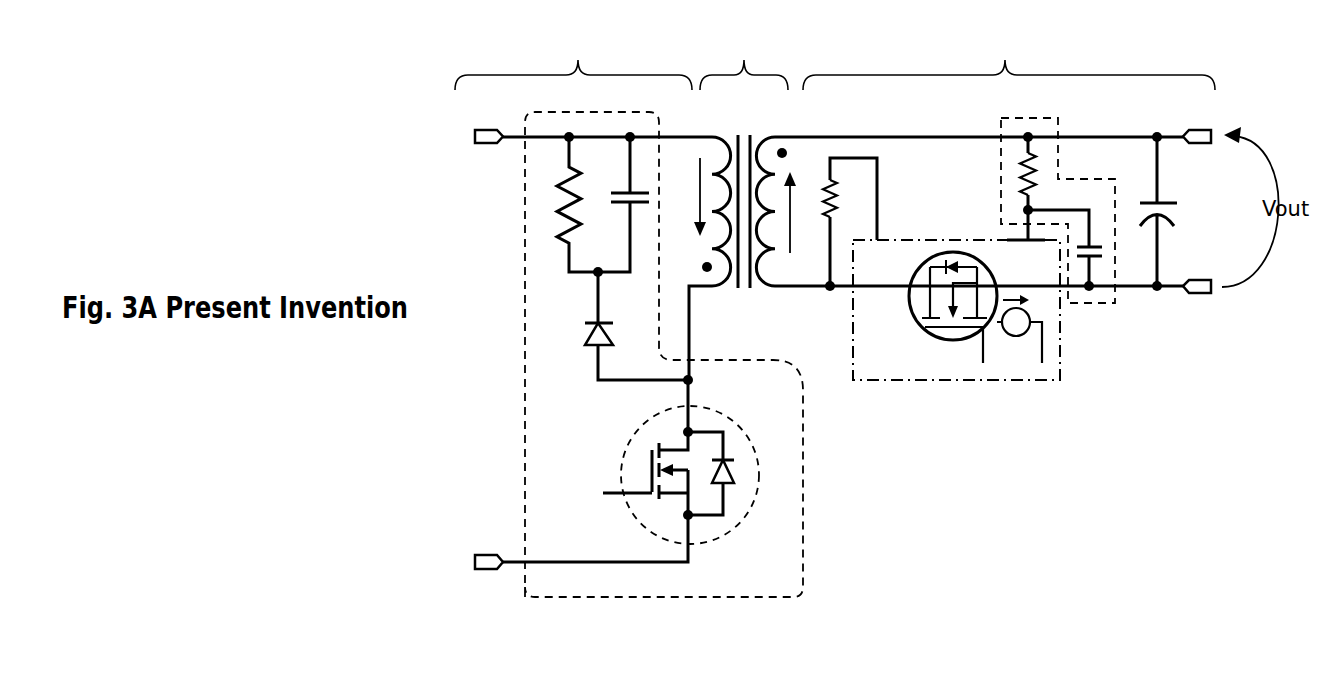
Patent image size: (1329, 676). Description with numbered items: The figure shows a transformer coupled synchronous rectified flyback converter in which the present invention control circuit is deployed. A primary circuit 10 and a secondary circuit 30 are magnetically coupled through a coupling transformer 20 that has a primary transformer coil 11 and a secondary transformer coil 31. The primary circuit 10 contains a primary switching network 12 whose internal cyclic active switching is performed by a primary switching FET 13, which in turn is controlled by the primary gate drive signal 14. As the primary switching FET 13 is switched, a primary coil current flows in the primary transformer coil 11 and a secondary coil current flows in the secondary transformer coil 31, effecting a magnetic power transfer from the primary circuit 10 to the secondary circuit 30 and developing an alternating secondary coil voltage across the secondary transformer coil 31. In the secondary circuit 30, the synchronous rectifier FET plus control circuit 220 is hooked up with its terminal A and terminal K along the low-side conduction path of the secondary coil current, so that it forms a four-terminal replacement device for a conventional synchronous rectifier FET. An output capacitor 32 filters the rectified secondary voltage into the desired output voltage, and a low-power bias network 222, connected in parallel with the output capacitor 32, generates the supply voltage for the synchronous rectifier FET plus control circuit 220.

The primary circuit 10 is at (573, 61).
The coupling transformer 20 is at (744, 160).
The secondary circuit 30 is at (1009, 61).
The primary transformer coil 11 is at (710, 293).
The primary switching network 12 is at (525, 326).
The primary switching FET 13 is at (760, 478).
The primary gate drive signal VGpri 14 is at (617, 492).
The secondary transformer coil 31 is at (773, 293).
The output capacitor 32 is at (1170, 200).
The FETsc plus control circuit 220 is at (1017, 380).
The low-power bias network 222 is at (1098, 303).